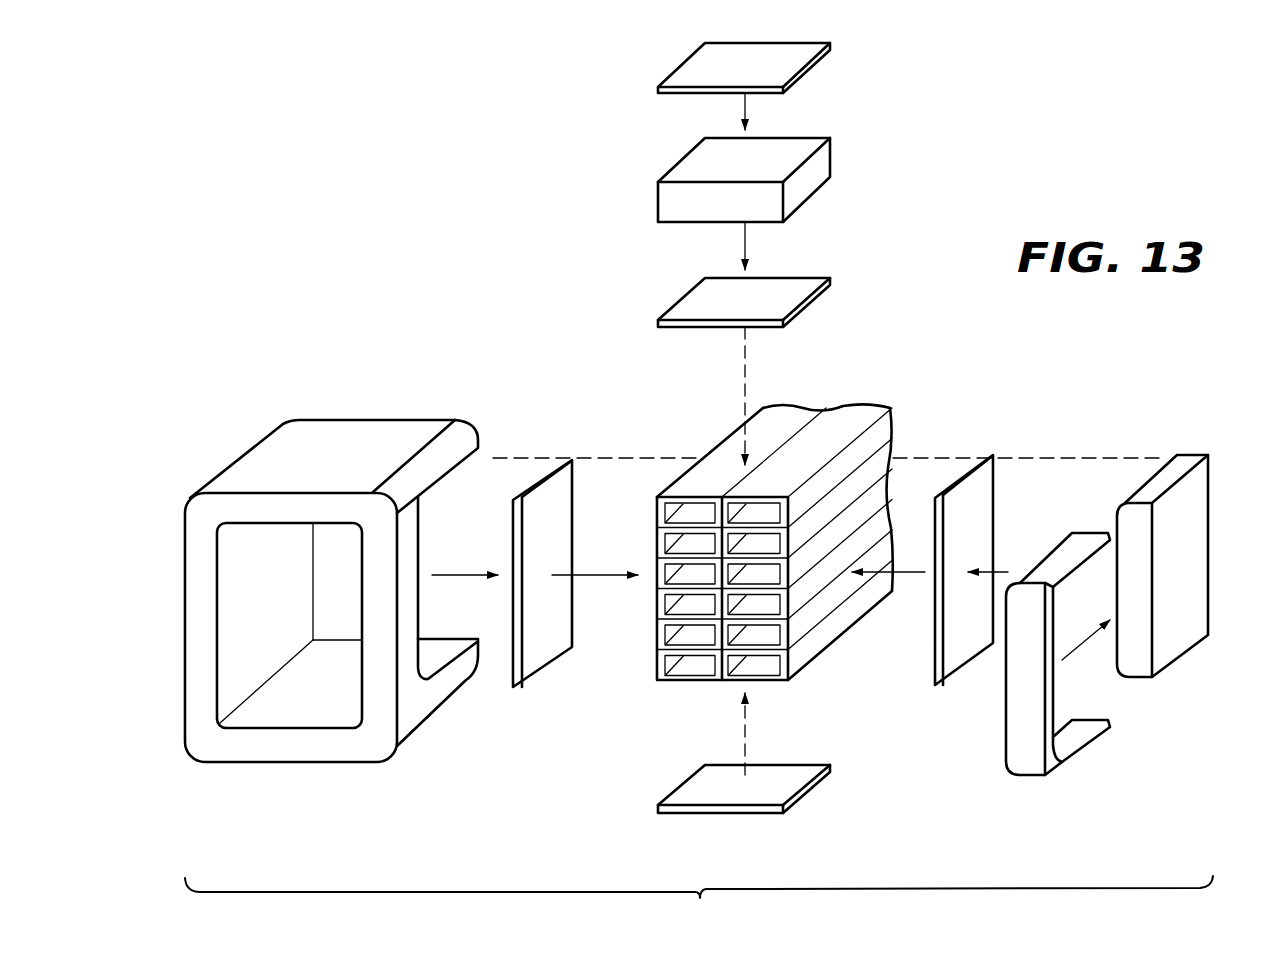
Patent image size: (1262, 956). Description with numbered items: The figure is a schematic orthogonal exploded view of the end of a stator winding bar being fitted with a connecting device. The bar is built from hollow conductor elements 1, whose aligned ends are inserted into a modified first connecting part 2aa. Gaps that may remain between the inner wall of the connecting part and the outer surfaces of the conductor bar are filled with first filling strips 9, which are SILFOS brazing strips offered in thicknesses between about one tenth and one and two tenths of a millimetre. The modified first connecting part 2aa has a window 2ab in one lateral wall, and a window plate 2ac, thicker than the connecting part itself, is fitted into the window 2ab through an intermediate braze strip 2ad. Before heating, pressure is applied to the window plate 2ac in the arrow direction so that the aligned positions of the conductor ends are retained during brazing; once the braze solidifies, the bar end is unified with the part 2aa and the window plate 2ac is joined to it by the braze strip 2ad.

The hollow conductor elements 1 is at (868, 400).
The first filling strips 9 is at (660, 89).
The modified first connecting part 2aa is at (355, 422).
The window 2ab is at (438, 618).
The window plate 2ac is at (1183, 643).
The braze strip 2ad is at (1013, 705).